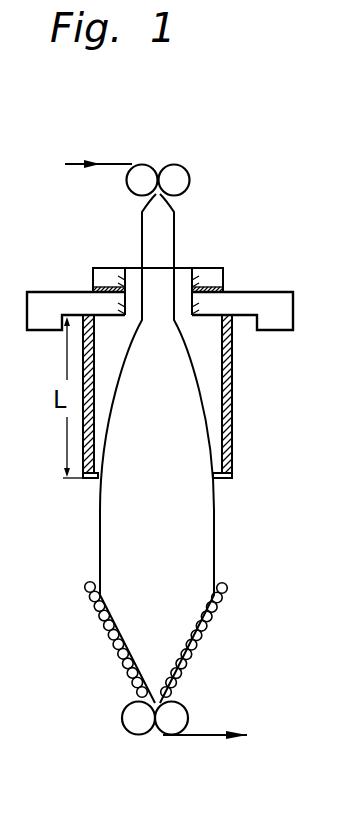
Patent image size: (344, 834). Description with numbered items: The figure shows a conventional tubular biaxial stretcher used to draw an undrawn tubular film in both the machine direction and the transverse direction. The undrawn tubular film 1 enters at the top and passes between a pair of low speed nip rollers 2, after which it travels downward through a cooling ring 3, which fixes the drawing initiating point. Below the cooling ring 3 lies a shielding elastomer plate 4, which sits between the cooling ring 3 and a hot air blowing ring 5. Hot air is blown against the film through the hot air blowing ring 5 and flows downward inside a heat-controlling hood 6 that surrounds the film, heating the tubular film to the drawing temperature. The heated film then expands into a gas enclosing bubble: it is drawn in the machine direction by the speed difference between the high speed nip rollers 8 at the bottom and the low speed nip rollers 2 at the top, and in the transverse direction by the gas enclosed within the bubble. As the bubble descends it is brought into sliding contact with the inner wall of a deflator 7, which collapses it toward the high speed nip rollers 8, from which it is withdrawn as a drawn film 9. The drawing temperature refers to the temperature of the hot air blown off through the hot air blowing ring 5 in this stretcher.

The undrawn tubular film 1 is at (107, 164).
The low speed nip rollers 2 is at (193, 175).
The cooling ring 3 is at (224, 272).
The shielding elastomer plate 4 is at (224, 290).
The hot air blowing ring 5 is at (293, 307).
The heat-controlling hood 6 is at (232, 397).
The deflator 7 is at (210, 618).
The high speed nip rollers 8 is at (188, 711).
The drawn film 9 is at (207, 737).